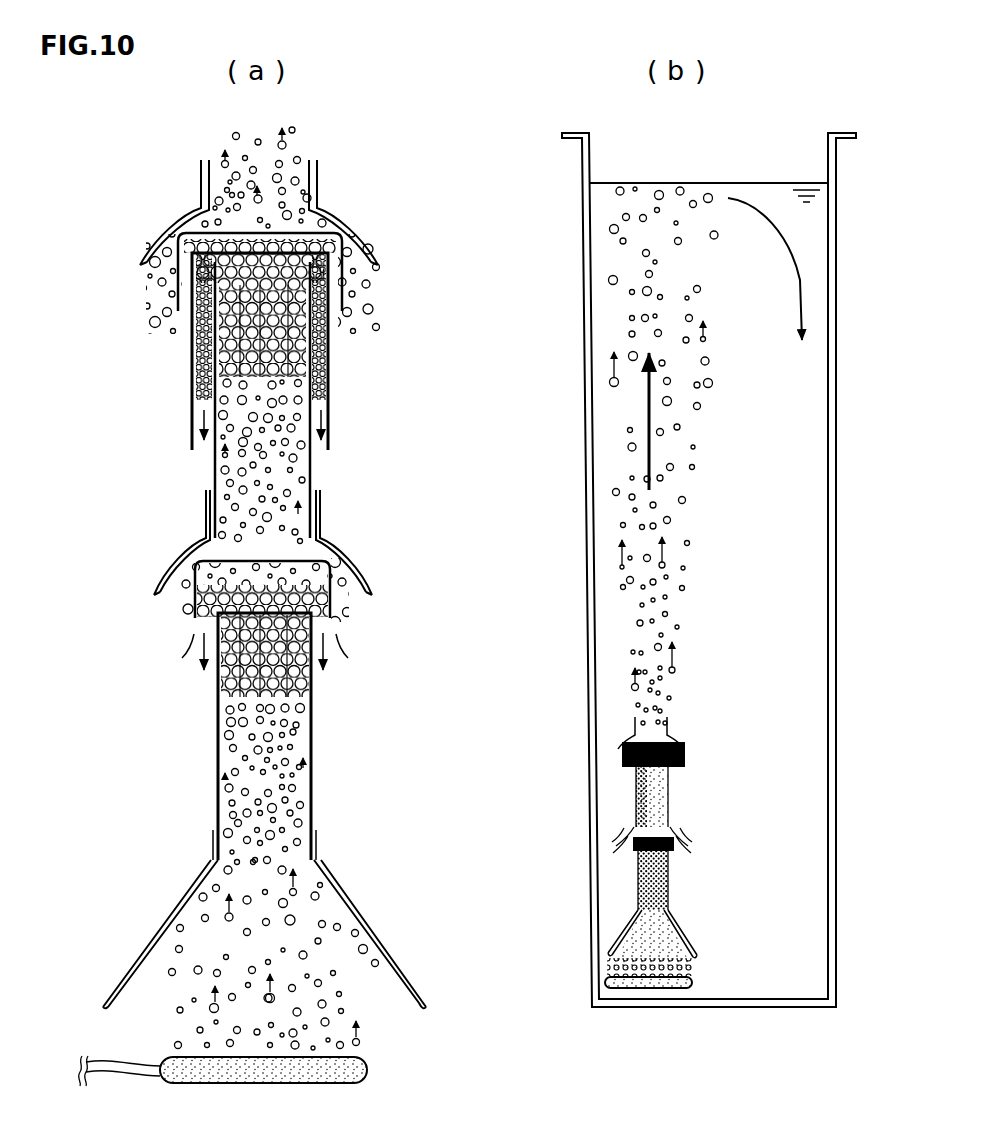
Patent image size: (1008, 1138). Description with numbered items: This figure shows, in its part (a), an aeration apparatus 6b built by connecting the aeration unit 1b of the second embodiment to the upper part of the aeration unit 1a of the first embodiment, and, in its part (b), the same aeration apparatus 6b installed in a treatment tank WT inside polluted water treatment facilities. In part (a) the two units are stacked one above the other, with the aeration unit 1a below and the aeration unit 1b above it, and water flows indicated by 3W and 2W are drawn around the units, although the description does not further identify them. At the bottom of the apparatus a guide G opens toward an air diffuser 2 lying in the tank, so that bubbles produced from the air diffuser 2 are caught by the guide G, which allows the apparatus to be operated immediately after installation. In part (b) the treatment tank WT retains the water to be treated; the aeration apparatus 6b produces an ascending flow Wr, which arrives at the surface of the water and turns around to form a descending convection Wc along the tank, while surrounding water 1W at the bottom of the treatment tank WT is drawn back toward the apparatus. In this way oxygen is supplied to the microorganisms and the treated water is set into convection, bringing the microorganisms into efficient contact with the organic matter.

The aeration apparatus 6b is at (151, 156).
The inflow water 3W is at (160, 272).
The aeration unit 1b is at (186, 405).
The downward water flow 2W is at (266, 565).
The aeration unit 1a is at (194, 779).
The guide G is at (152, 932).
The air diffuser 2 is at (367, 1070).
The treatment tank WT is at (583, 453).
The descending convection Wc is at (798, 280).
The ascending flow Wr is at (650, 417).
The surrounding water 1W is at (712, 978).